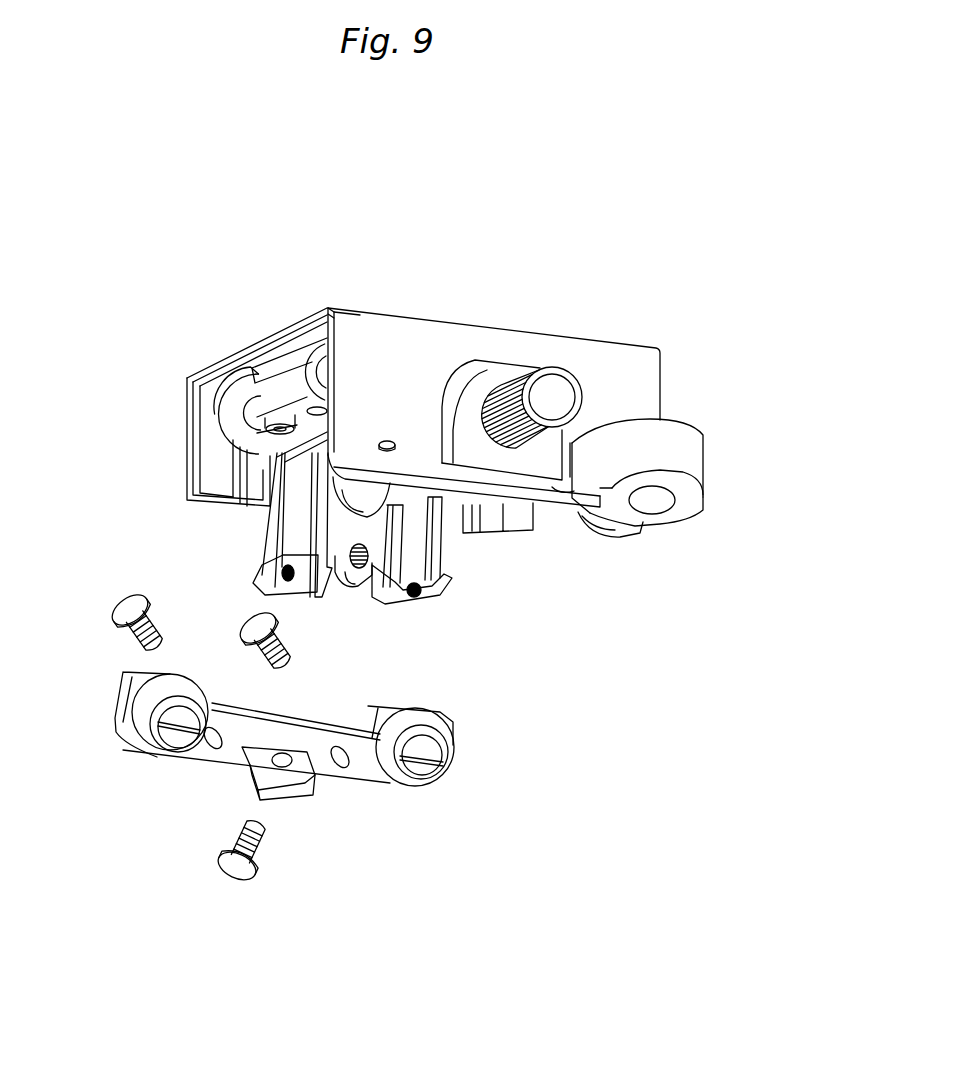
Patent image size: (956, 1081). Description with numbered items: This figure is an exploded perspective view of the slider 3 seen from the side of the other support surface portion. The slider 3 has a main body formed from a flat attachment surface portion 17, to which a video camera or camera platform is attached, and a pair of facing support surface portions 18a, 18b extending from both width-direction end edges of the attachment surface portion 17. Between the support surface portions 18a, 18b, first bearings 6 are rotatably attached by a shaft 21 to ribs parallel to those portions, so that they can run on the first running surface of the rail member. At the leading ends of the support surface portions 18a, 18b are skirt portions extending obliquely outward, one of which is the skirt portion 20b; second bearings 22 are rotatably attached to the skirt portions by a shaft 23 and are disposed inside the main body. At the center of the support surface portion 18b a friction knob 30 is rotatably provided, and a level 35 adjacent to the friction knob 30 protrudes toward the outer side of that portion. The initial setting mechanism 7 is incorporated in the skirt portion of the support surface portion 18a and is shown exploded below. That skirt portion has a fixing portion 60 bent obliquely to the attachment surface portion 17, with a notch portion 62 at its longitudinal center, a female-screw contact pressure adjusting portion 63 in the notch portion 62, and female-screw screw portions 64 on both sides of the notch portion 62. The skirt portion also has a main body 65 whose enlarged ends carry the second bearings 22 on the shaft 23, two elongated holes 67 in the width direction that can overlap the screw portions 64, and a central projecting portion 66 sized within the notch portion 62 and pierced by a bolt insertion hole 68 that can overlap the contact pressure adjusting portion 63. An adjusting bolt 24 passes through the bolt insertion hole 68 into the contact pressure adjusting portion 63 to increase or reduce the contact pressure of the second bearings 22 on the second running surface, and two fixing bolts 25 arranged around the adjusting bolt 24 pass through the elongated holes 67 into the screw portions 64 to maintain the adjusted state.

The slider 3 is at (482, 283).
The first bearing 6 is at (235, 405).
The initial setting mechanism 7 is at (342, 731).
The attachment surface portion 17 is at (402, 310).
The support surface portion 18a is at (185, 445).
The support surface portion 18b is at (366, 345).
The skirt portion 20b is at (565, 492).
The shaft 21 is at (285, 380).
The second bearing 22 is at (430, 495).
The shaft 23 is at (389, 440).
The adjusting bolt 24 is at (238, 885).
The fixing bolt 25 is at (122, 595).
The friction knob 30 is at (574, 372).
The level 35 is at (708, 449).
The fixing portion 60 is at (255, 572).
The notch portion 62 is at (358, 598).
The contact pressure adjusting portion 63 is at (363, 570).
The screw portion 64 is at (292, 585).
The main body 65 is at (200, 755).
The projecting portion 66 is at (295, 790).
The elongated hole 67 is at (222, 752).
The bolt insertion hole 68 is at (288, 752).